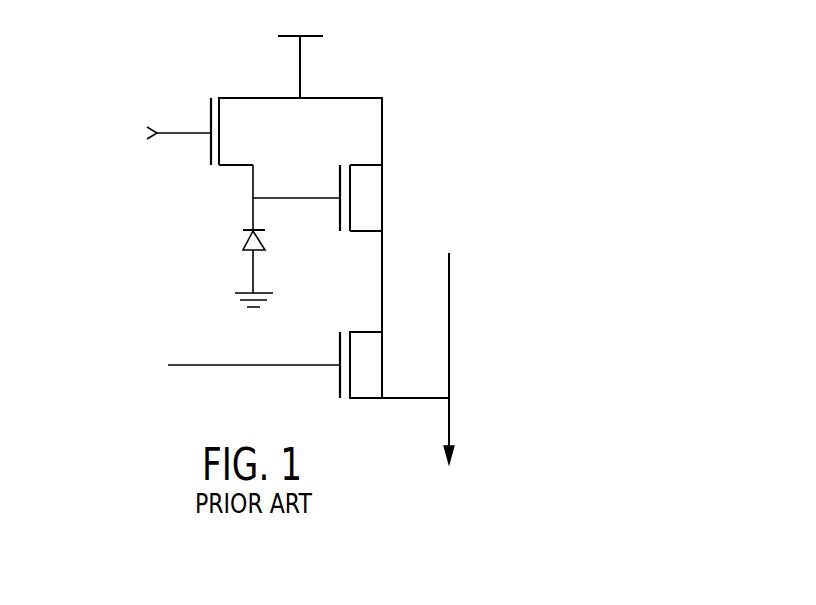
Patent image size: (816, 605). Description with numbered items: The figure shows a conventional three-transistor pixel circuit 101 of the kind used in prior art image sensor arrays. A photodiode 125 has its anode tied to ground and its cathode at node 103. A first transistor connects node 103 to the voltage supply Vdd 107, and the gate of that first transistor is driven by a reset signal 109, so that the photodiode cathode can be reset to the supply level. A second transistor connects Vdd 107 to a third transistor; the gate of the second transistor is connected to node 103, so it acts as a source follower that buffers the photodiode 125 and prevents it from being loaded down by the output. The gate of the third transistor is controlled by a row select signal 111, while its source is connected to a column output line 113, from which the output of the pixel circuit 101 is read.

The pixel circuit 101 is at (429, 128).
The node 103 is at (247, 200).
The Vdd 107 is at (293, 52).
The reset signal 109 is at (129, 134).
The row select signal 111 is at (176, 366).
The column output line 113 is at (437, 405).
The photodiode 125 is at (263, 242).